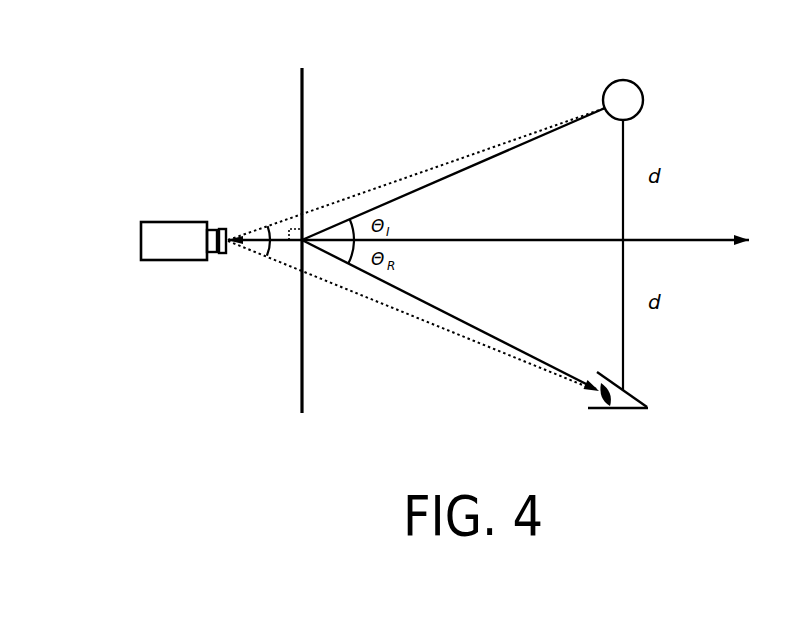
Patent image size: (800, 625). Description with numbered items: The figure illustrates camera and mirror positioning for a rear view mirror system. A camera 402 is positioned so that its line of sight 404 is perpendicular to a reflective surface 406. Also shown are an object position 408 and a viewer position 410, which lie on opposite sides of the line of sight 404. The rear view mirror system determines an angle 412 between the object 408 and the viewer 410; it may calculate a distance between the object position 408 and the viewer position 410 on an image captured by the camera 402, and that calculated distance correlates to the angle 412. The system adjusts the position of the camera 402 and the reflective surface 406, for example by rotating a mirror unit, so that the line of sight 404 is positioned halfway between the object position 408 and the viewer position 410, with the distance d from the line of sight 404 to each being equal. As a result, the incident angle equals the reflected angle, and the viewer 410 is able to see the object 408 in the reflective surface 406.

The camera 402 is at (172, 222).
The line of sight 404 is at (503, 229).
The reflective surface 406 is at (303, 90).
The object position 408 is at (642, 97).
The viewer position 410 is at (622, 390).
The angle 412 is at (268, 231).